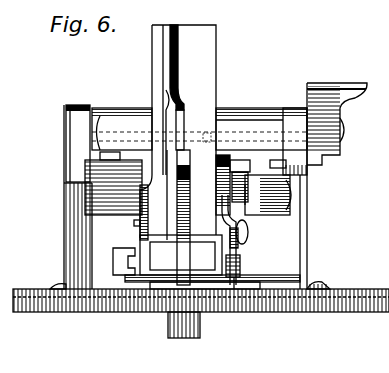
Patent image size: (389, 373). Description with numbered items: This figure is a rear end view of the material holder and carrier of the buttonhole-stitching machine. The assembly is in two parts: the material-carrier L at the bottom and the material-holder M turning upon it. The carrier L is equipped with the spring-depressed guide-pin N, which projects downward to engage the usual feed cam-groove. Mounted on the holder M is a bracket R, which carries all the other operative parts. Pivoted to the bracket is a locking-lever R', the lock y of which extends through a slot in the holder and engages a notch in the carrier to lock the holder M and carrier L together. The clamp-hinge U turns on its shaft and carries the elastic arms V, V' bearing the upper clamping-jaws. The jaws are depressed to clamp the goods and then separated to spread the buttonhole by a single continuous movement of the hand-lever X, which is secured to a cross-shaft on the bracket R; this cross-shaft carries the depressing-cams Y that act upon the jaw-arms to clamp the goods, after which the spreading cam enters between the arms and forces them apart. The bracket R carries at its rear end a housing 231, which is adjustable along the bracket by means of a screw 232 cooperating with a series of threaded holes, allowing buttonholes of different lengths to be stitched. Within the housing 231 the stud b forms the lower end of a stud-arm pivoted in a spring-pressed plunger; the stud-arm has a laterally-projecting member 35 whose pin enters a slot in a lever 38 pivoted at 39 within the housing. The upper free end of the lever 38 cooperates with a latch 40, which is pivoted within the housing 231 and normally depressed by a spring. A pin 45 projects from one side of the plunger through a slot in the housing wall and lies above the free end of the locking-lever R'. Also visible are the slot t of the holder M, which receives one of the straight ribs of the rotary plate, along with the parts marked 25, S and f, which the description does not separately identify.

The latch 40 is at (178, 125).
The housing 231 is at (193, 67).
The lever 38 is at (183, 88).
The pivot 39 is at (188, 130).
The laterally-projecting member 35 is at (190, 204).
The pin 45 is at (216, 186).
The hatched strip 25 is at (140, 232).
The screw 232 is at (242, 266).
The depressing-cams Y is at (124, 118).
The hand-lever X is at (337, 116).
The elastic arm V is at (79, 143).
The bearing block V' is at (288, 141).
The clamp-hinge U is at (90, 164).
The roller S is at (290, 190).
The slot t is at (290, 208).
The stud b is at (212, 262).
The locking-lever R' is at (248, 240).
The bracket R is at (173, 186).
The material-holder M is at (193, 279).
The lock y is at (240, 282).
The bracket f is at (113, 258).
The material-carrier L is at (105, 313).
The guide-pin N is at (178, 339).